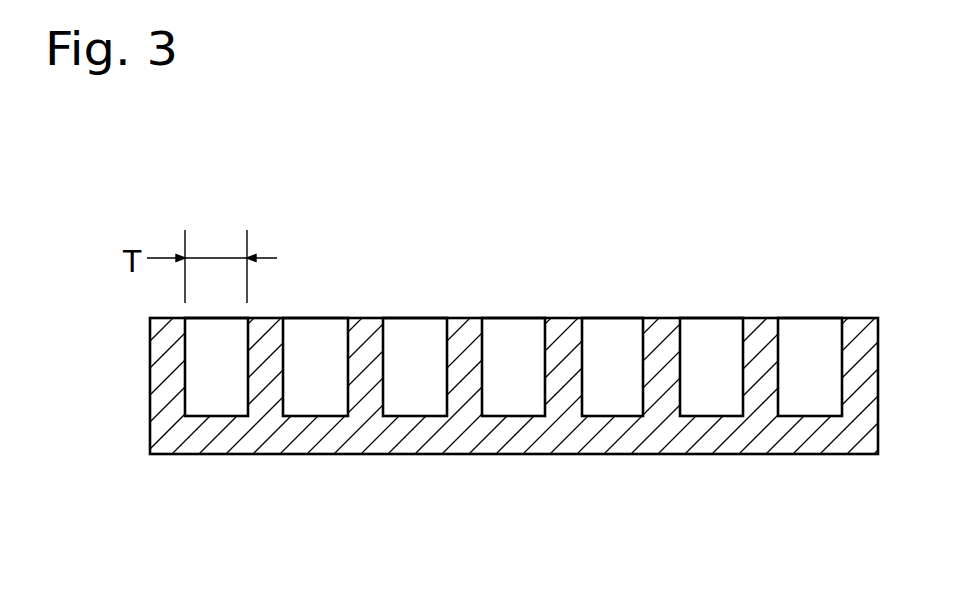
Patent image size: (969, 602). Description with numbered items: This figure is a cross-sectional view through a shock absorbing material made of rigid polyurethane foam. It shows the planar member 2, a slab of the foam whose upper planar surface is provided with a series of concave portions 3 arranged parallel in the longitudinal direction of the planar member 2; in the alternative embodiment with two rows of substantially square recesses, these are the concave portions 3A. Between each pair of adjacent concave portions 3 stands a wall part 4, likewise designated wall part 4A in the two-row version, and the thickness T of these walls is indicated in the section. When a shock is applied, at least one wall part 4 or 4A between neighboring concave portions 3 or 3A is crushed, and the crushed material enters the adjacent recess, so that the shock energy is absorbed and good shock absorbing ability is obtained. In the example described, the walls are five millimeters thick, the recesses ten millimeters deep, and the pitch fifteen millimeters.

The planar member 2 is at (382, 455).
The concave portions 3 is at (602, 337).
The concave portions 3A is at (803, 333).
The wall part 4 is at (462, 330).
The wall part 4A is at (762, 332).